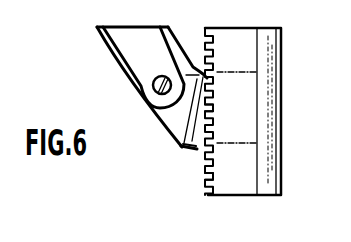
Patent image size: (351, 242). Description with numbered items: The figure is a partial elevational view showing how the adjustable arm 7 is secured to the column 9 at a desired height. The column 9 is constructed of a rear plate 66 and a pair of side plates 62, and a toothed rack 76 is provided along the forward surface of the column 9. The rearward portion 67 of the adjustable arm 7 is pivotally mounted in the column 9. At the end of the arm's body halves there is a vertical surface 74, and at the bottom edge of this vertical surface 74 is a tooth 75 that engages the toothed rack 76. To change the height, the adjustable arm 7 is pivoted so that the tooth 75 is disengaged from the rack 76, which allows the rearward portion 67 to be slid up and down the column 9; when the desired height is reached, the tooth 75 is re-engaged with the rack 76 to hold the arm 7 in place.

The adjustable arm 7 is at (107, 61).
The column 9 is at (249, 128).
The side plates 62 is at (235, 180).
The rear plate 66 is at (270, 134).
The rearward portion 67 is at (203, 107).
The vertical surface 74 is at (190, 122).
The tooth 75 is at (188, 149).
The toothed rack 76 is at (203, 171).